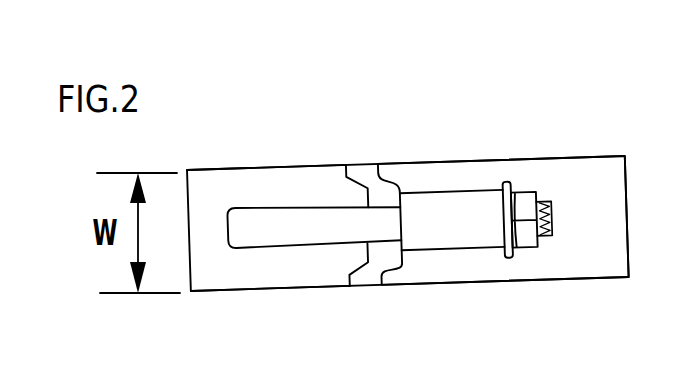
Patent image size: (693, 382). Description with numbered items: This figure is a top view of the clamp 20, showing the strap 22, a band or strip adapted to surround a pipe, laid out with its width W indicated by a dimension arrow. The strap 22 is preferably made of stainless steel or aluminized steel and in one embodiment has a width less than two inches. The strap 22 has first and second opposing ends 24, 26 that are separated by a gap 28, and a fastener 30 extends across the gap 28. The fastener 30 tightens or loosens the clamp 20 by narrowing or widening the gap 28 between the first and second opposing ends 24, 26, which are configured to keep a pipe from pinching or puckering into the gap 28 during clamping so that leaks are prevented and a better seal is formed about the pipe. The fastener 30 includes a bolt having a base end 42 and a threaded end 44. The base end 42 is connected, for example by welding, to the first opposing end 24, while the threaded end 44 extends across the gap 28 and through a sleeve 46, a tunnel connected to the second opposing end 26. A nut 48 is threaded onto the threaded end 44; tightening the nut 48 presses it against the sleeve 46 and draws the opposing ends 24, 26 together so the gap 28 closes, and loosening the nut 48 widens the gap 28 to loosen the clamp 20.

The clamp 20 is at (549, 94).
The strap 22 is at (592, 157).
The first opposing end 24 is at (280, 166).
The second opposing end 26 is at (393, 162).
The gap 28 is at (363, 142).
The fastener 30 is at (257, 213).
The base end 42 is at (262, 248).
The threaded end 44 is at (547, 235).
The sleeve 46 is at (423, 252).
The nut 48 is at (527, 247).